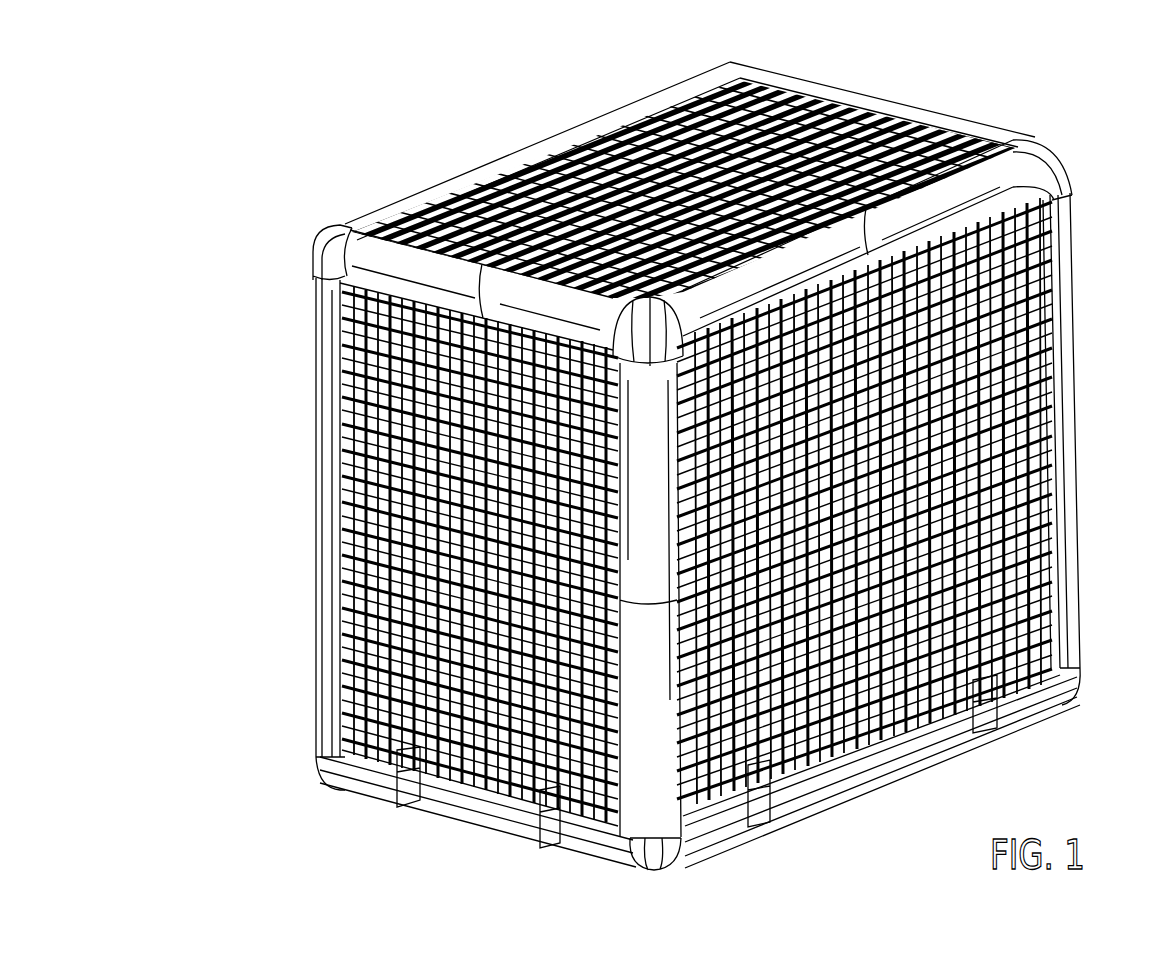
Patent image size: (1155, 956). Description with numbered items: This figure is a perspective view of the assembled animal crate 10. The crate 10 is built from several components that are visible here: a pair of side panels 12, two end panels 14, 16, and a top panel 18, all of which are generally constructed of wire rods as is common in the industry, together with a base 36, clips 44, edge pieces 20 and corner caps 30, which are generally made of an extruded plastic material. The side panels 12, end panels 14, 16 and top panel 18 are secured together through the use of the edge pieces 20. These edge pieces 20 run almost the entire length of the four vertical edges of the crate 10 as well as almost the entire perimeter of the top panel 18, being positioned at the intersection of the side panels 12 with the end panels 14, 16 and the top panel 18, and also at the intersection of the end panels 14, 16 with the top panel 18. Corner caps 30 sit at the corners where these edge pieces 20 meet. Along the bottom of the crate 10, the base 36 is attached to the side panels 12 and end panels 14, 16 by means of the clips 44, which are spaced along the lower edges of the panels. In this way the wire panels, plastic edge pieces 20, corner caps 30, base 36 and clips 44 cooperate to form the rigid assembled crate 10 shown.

The crate 10 is at (898, 92).
The side panels 12 is at (1040, 300).
The end panel 14 is at (1077, 208).
The end panel 16 is at (352, 455).
The top panel 18 is at (621, 118).
The edge pieces 20 is at (363, 253).
The corner caps 30 is at (320, 247).
The base 36 is at (456, 813).
The clips 44 is at (392, 773).